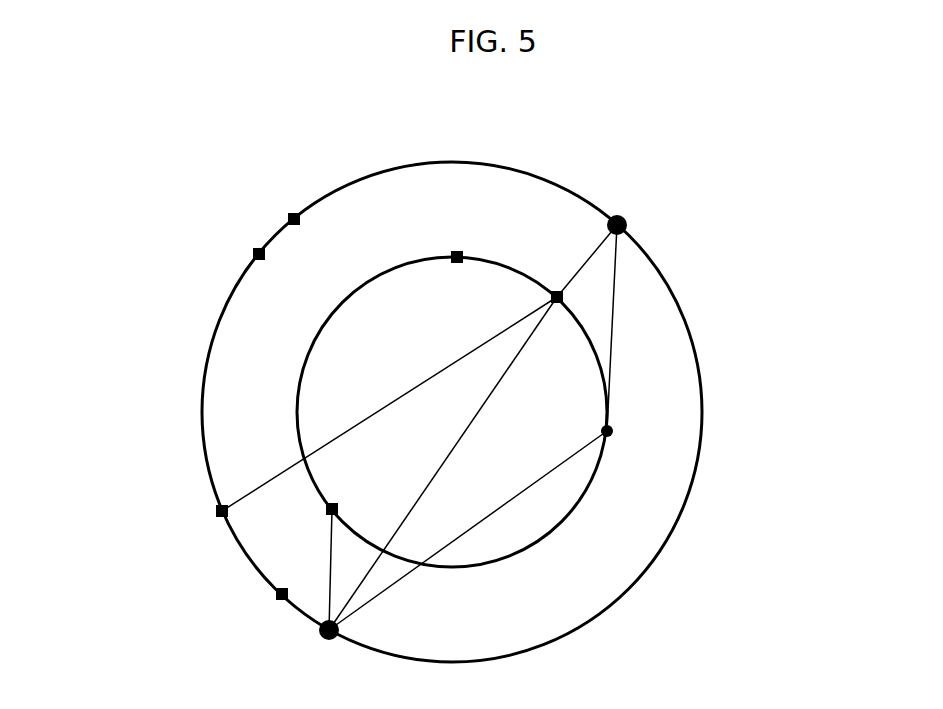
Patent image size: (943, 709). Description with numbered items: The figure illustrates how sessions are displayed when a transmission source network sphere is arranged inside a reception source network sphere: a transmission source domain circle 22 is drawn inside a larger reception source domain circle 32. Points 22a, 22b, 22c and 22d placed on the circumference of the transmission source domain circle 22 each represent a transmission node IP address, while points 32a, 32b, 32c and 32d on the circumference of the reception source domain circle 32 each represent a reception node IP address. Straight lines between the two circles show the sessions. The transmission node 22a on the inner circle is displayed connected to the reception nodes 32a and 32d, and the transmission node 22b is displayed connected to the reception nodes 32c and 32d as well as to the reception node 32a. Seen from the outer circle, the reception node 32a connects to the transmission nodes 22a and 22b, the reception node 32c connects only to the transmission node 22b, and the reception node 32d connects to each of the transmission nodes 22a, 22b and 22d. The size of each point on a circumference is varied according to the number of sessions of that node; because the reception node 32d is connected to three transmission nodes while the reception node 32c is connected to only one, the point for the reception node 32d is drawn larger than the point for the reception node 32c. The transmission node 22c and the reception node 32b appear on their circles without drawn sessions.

The transmission source domain circle 22 is at (290, 368).
The reception source domain circle 32 is at (702, 342).
The transmission node 22a is at (614, 433).
The transmission node 22b is at (553, 292).
The transmission node 22c is at (454, 252).
The transmission node 22d is at (326, 510).
The reception node 32a is at (617, 214).
The reception node 32b is at (292, 214).
The reception node 32c is at (218, 511).
The reception node 32d is at (322, 630).